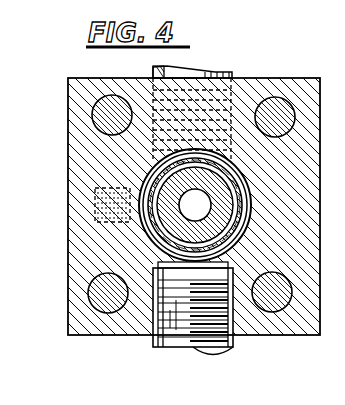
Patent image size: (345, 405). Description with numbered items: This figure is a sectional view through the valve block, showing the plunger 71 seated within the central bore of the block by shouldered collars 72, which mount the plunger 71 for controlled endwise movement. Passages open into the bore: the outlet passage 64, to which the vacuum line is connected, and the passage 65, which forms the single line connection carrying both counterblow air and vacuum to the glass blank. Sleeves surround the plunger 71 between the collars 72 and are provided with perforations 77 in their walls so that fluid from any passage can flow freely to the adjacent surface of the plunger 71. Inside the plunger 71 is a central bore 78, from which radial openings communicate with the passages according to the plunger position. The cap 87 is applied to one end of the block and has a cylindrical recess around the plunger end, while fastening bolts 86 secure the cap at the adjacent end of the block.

The outlet passage 64 is at (175, 330).
The passage 65 is at (229, 84).
The plunger 71 is at (155, 270).
The shouldered collars 72 is at (95, 204).
The perforations 77 is at (146, 230).
The central bore 78 is at (162, 146).
The fastening bolts 86 is at (104, 120).
The cap 87 is at (250, 94).